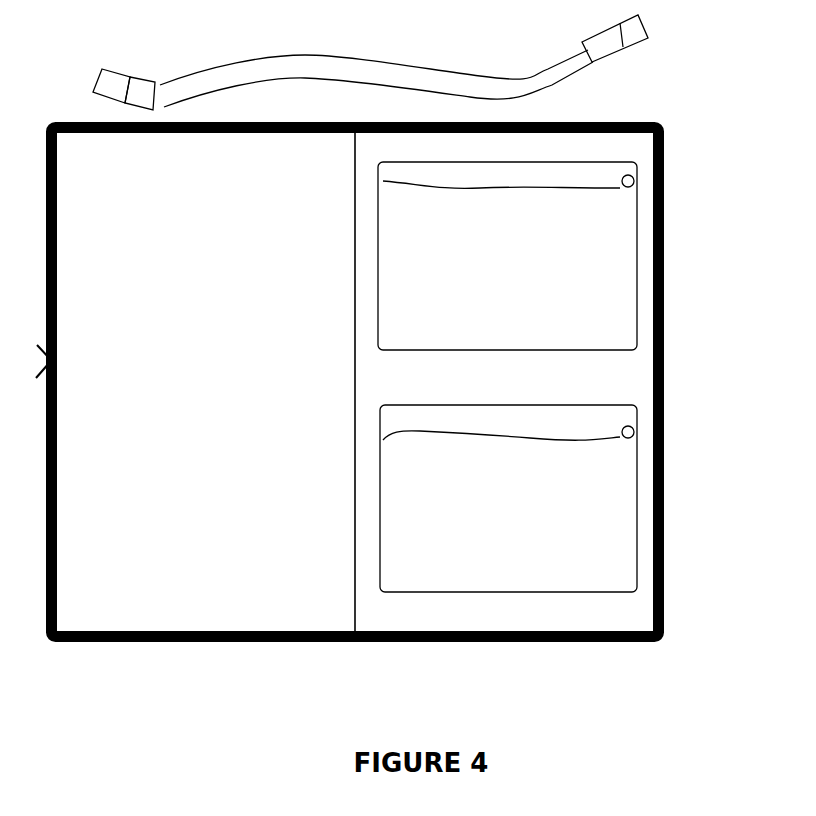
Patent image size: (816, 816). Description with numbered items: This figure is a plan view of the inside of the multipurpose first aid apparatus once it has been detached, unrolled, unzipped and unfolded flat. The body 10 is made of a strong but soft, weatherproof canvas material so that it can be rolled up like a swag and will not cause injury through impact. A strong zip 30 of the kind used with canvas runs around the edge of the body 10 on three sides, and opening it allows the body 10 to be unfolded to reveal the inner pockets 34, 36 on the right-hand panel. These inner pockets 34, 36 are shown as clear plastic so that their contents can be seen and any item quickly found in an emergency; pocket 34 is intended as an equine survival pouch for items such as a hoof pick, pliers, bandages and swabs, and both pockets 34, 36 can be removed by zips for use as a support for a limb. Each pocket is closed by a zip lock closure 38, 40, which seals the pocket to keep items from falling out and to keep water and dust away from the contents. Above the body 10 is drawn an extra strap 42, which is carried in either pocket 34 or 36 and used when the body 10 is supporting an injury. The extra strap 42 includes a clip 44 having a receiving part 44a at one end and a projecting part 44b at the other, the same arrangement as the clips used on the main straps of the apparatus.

The body 10 is at (585, 385).
The zip 30 is at (662, 232).
The inner pocket 34 is at (593, 315).
The inner pocket 36 is at (545, 523).
The zip lock closure 38 is at (634, 178).
The zip lock closure 40 is at (634, 428).
The extra strap 42 is at (410, 87).
The clip 44 is at (389, 61).
The receiving part 44a is at (102, 78).
The projecting part 44b is at (637, 35).